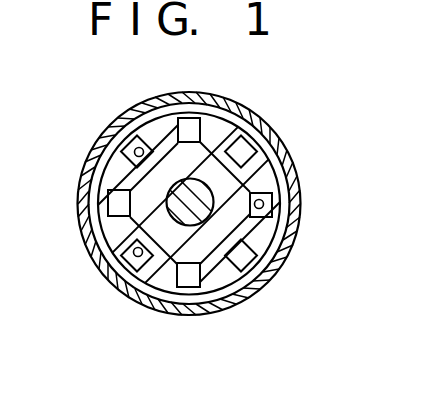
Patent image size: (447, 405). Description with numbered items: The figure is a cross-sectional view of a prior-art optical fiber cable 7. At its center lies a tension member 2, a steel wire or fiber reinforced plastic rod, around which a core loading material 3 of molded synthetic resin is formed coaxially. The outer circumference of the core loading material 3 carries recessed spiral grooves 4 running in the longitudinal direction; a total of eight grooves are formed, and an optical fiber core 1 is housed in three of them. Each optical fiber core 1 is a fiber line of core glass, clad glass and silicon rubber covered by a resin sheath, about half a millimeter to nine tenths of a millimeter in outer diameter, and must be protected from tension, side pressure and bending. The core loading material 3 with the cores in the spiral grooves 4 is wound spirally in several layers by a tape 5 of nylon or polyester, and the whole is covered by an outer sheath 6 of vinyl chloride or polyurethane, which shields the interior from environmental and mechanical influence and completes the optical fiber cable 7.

The optical fiber core 1 is at (264, 204).
The tension member 2 is at (212, 213).
The core loading material 3 is at (264, 177).
The spiral grooves 4 is at (243, 148).
The tape 5 is at (236, 283).
The outer sheath 6 is at (208, 314).
The optical fiber cable 7 is at (235, 86).